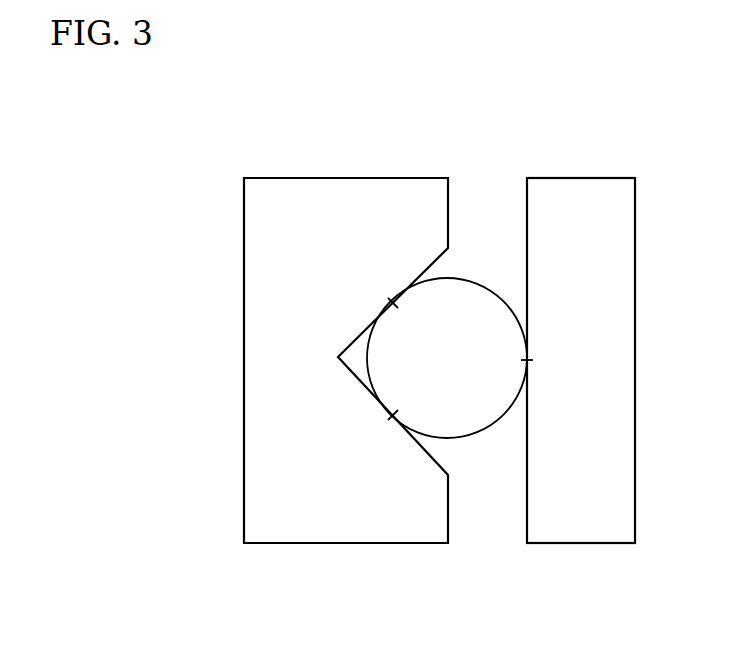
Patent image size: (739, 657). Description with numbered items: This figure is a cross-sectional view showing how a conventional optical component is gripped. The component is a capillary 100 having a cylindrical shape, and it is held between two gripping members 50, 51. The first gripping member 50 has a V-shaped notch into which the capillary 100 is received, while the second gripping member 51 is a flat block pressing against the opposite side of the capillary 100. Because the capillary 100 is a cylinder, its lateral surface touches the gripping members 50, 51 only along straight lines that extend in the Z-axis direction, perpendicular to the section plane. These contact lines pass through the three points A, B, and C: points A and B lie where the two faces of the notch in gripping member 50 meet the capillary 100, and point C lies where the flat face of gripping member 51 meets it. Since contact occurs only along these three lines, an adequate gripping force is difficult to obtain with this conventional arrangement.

The gripping member 50 is at (354, 205).
The gripping member 51 is at (587, 205).
The capillary 100 is at (485, 282).
The point A is at (386, 287).
The point B is at (380, 430).
The point C is at (538, 360).